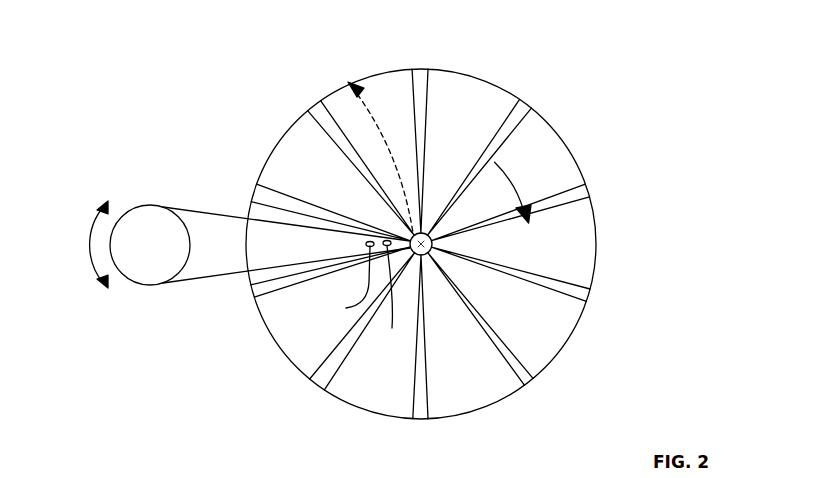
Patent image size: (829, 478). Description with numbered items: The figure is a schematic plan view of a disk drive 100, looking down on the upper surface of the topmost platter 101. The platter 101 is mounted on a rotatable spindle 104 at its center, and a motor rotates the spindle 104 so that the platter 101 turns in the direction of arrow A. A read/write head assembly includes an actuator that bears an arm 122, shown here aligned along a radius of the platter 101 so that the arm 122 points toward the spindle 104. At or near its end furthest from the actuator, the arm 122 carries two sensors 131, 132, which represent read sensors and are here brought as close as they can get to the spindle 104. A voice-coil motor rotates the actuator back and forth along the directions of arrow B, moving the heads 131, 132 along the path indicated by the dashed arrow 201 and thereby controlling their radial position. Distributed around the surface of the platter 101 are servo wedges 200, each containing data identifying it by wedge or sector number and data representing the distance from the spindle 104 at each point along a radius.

The disk drive 100 is at (177, 41).
The platter 101 is at (361, 78).
The spindle 104 is at (427, 232).
The arm 122 is at (177, 210).
The sensor 131 is at (389, 296).
The sensor 132 is at (338, 282).
The servo wedge 200 is at (420, 80).
The dashed arrow 201 is at (388, 138).